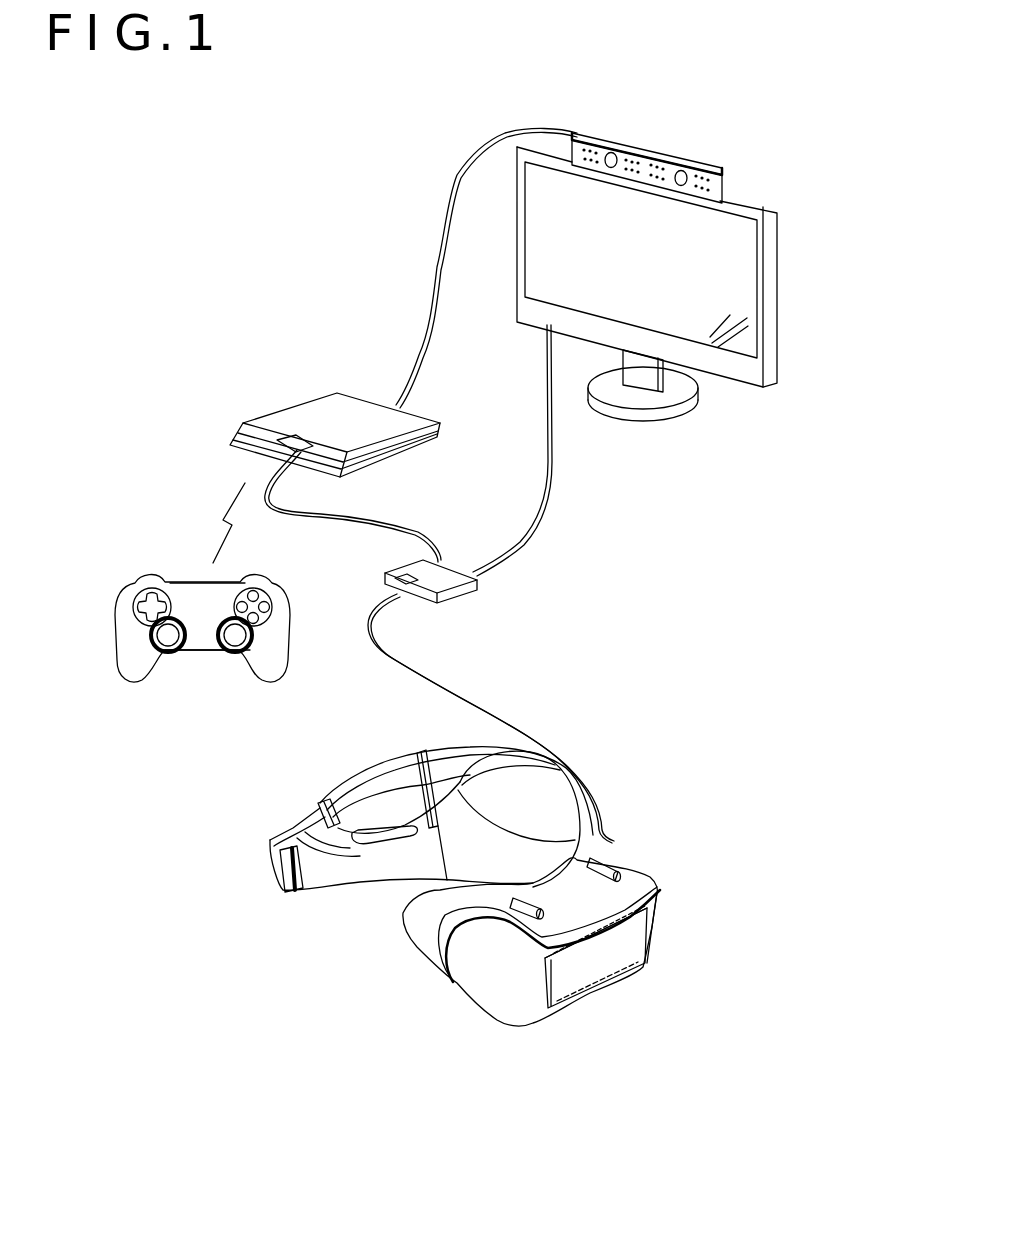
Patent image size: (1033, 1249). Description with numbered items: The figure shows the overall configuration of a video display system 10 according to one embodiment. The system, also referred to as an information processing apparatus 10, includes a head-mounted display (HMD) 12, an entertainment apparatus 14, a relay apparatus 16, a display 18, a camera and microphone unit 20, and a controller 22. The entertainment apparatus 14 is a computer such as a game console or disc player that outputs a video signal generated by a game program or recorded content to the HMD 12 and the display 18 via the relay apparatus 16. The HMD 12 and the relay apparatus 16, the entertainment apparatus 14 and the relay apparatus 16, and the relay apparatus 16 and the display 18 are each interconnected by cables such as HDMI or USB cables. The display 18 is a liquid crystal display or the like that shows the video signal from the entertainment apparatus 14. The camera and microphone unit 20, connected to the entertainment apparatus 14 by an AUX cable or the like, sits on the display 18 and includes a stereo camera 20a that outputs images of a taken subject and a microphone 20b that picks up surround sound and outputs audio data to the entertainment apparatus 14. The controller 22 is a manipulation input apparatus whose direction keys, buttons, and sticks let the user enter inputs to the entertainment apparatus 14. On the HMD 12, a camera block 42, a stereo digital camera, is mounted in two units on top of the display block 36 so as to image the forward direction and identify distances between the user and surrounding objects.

The video display system 10 is at (758, 1013).
The head-mounted display 12 is at (492, 917).
The entertainment apparatus 14 is at (282, 405).
The relay apparatus 16 is at (477, 576).
The display 18 is at (778, 292).
The camera and microphone unit 20 is at (674, 157).
The camera 20a is at (610, 172).
The microphone 20b is at (640, 152).
The controller 22 is at (290, 636).
The display block 36 is at (655, 922).
The camera block 42 is at (590, 862).